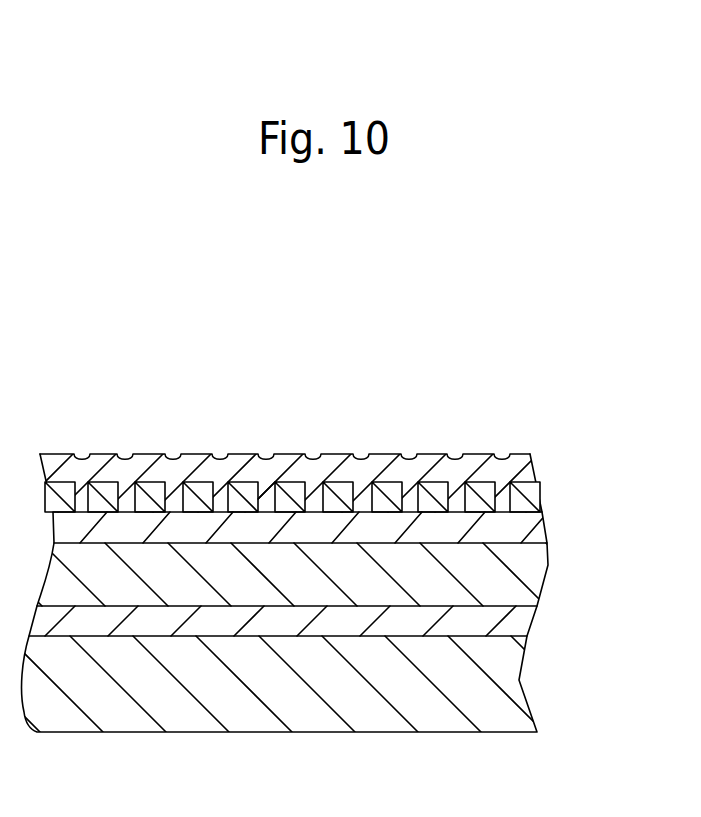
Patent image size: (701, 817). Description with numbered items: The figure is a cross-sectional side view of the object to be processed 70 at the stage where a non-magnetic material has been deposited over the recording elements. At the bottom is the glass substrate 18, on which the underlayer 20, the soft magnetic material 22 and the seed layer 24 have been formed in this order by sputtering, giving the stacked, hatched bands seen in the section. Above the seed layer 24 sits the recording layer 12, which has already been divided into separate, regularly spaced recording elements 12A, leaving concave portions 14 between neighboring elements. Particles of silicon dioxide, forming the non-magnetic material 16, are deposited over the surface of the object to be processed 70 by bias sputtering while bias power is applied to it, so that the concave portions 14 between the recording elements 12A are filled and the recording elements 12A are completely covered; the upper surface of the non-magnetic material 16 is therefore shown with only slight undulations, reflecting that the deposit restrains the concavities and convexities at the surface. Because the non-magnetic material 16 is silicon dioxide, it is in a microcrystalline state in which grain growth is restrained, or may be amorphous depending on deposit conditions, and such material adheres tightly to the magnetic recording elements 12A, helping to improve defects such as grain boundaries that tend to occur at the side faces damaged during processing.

The object to be processed 70 is at (312, 280).
The non-magnetic material 16 is at (535, 472).
The recording layer 12 is at (331, 458).
The recording element 12A is at (282, 485).
The concave portion 14 is at (270, 487).
The seed layer 24 is at (547, 530).
The soft magnetic material 22 is at (547, 575).
The underlayer 20 is at (530, 623).
The glass substrate 18 is at (520, 673).